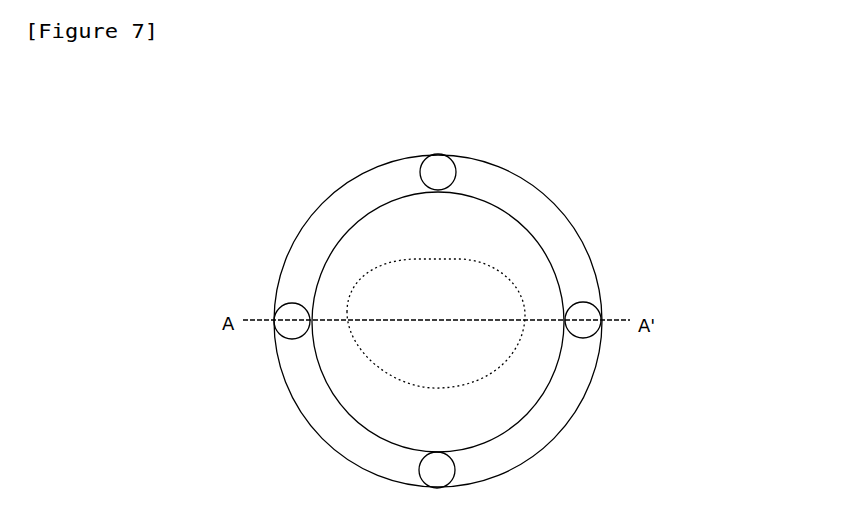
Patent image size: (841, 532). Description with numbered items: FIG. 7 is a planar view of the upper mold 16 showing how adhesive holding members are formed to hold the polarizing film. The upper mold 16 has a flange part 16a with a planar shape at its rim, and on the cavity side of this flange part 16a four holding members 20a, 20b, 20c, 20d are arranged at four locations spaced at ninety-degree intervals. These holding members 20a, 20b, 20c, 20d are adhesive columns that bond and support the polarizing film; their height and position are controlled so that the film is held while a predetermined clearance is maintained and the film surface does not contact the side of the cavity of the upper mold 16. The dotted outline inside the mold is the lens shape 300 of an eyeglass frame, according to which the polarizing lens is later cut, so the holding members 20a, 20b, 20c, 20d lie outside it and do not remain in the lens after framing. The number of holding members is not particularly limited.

The upper mold 16 is at (546, 158).
The flange part 16a is at (346, 199).
The holding member 20a is at (289, 327).
The holding member 20b is at (428, 168).
The holding member 20c is at (583, 312).
The holding member 20d is at (447, 470).
The lens shape 300 is at (507, 273).